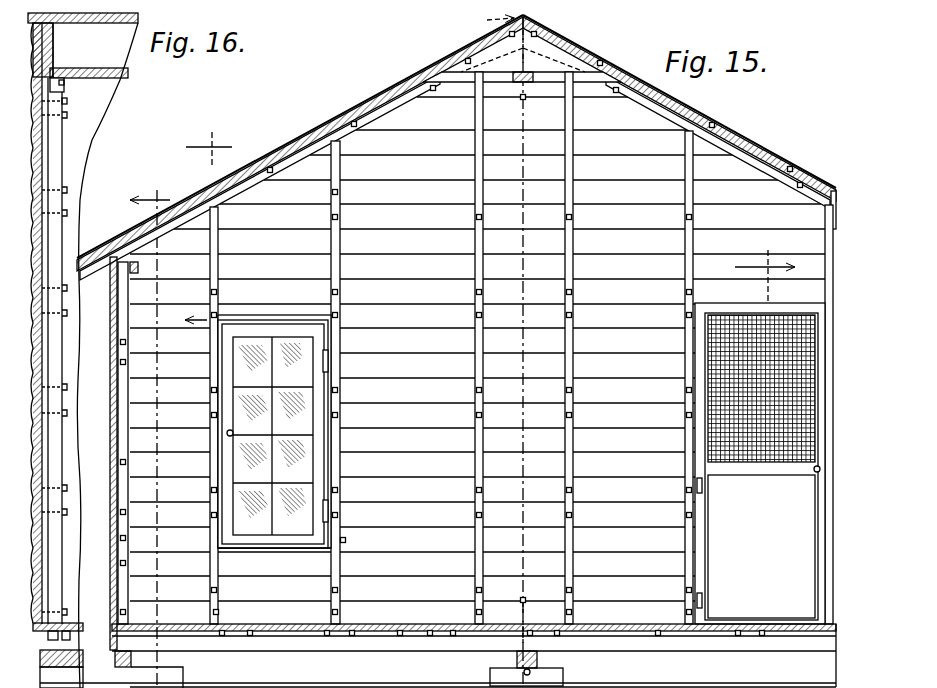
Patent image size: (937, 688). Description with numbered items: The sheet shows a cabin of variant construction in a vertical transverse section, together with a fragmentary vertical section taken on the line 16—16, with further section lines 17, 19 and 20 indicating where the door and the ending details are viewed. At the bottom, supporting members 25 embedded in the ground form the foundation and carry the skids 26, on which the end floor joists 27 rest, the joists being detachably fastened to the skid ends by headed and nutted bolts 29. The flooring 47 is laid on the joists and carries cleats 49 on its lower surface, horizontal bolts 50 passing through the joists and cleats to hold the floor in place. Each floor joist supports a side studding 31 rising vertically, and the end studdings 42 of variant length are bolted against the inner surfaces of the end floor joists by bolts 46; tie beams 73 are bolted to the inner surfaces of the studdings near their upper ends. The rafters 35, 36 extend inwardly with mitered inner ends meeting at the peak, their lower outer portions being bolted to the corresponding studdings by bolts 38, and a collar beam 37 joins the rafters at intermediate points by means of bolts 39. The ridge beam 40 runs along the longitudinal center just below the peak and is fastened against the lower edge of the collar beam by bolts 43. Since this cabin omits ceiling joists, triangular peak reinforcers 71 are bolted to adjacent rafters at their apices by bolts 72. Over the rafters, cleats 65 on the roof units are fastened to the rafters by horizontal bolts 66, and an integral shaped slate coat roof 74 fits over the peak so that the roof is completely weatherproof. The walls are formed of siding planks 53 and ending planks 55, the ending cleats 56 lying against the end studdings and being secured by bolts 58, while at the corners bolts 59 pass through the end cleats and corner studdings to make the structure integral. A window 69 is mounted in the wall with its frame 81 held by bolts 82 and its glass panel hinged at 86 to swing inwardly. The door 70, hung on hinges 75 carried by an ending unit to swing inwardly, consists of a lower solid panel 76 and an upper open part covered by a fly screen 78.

In FIG. 15, the section line 16— 16 is at (491, 350).
In FIG. 15, the section line 17— 17 is at (777, 277).
In FIG. 15, the section line 19— 19 is at (160, 438).
In FIG. 15, the section line 20— 20 is at (210, 230).
In FIG. 15, the supporting members 25 is at (498, 675).
In FIG. 15, the skids 26 is at (133, 656).
In FIG. 16, the end floor joists 27 is at (47, 608).
In FIG. 15, the end floor joists 27 is at (263, 645).
In FIG. 16, the headed and nutted bolts 29 is at (118, 682).
In FIG. 15, the side studding 31 is at (128, 418).
In FIG. 15, the roof rafter 35 is at (299, 165).
In FIG. 16, the roof rafter 36 is at (56, 38).
In FIG. 15, the roof rafter 36 is at (742, 158).
In FIG. 16, the collar beam 37 is at (66, 90).
In FIG. 15, the collar beam 37 is at (588, 84).
In FIG. 15, the headed and nutted bolt 38 is at (112, 258).
In FIG. 15, the headed and nutted bolts 39 is at (618, 93).
In FIG. 16, the ridge beam 40 is at (128, 73).
In FIG. 15, the ridge beam 40 is at (518, 83).
In FIG. 16, the end studdings 42 is at (55, 140).
In FIG. 15, the end studdings 42 is at (686, 175).
In FIG. 16, the headed and nutted bolts 43 is at (67, 101).
In FIG. 15, the headed and nutted bolts 43 is at (526, 99).
In FIG. 15, the headed and nutted bolts 46 is at (219, 612).
In FIG. 16, the flooring 47 is at (67, 623).
In FIG. 15, the flooring 47 is at (398, 629).
In FIG. 16, the cleats 49 is at (58, 637).
In FIG. 15, the cleats 49 is at (352, 637).
In FIG. 15, the headed and nutted bolts 50 is at (452, 637).
In FIG. 15, the planks 53 is at (110, 392).
In FIG. 16, the planks 55 is at (42, 242).
In FIG. 15, the planks 55 is at (420, 428).
In FIG. 16, the cleats 56 is at (42, 348).
In FIG. 16, the headed and nutted bolts 58 is at (67, 191).
In FIG. 15, the headed and nutted bolts 58 is at (574, 315).
In FIG. 15, the headed and nutted bolts 59 is at (126, 362).
In FIG. 15, the cleats 65 is at (682, 118).
In FIG. 15, the headed and nutted bolts 66 is at (792, 181).
In FIG. 15, the window 69 is at (300, 422).
In FIG. 15, the door 70 is at (718, 532).
In FIG. 16, the peak reinforcers 71 is at (60, 52).
In FIG. 15, the peak reinforcers 71 is at (548, 45).
In FIG. 15, the headed and nutted bolts 72 is at (603, 62).
In FIG. 15, the tie beams 73 is at (140, 268).
In FIG. 16, the slate coat roof 74 is at (140, 17).
In FIG. 15, the slate coat roof 74 is at (346, 118).
In FIG. 15, the hinges 75 is at (697, 600).
In FIG. 15, the lower solid panel 76 is at (717, 555).
In FIG. 15, the fly screen 78 is at (708, 352).
In FIG. 15, the window frame 81 is at (248, 552).
In FIG. 15, the headed and nutted bolts 82 is at (346, 540).
In FIG. 15, the hinge 86 is at (330, 503).